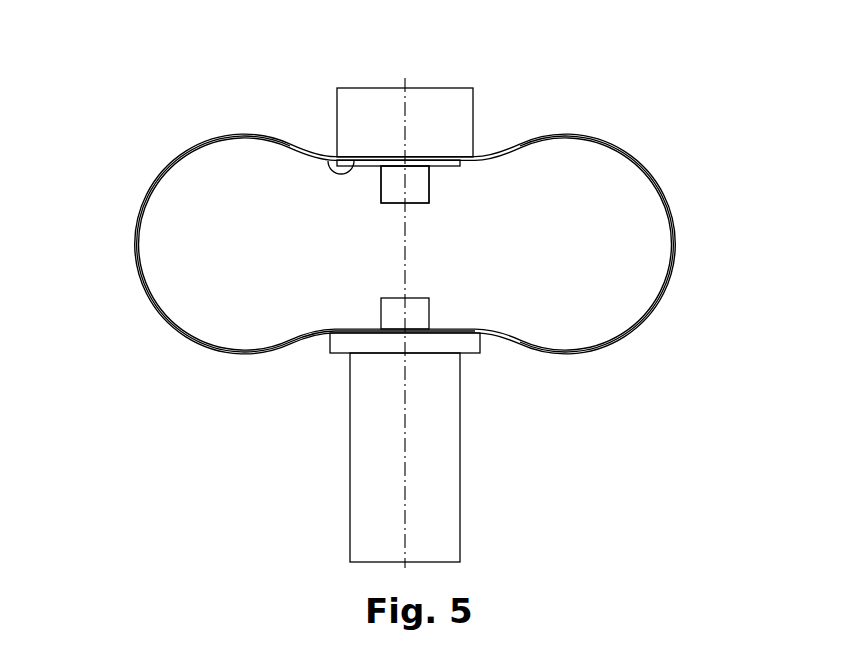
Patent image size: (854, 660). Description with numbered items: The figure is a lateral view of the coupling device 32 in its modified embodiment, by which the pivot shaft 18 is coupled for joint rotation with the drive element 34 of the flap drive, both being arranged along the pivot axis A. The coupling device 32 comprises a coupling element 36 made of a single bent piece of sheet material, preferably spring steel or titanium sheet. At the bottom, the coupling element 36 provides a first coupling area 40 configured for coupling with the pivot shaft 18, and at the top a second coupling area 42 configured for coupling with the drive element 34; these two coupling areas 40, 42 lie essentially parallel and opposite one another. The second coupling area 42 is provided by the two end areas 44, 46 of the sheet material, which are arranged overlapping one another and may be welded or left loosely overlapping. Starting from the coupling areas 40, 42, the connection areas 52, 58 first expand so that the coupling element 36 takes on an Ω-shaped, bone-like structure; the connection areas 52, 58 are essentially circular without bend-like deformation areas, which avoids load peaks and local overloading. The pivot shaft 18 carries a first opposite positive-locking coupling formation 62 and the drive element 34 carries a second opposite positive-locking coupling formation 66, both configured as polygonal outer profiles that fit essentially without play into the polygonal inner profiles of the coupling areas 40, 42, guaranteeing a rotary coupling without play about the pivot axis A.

The pivot shaft 18 is at (350, 528).
The coupling device 32 is at (655, 335).
The drive element 34 is at (368, 88).
The coupling element 36 is at (208, 372).
The first coupling area 40 is at (380, 344).
The second coupling area 42 is at (360, 179).
The end area 44 is at (336, 160).
The end area 46 is at (446, 157).
The connection area 52 is at (666, 202).
The connection area 58 is at (137, 253).
The first opposite positive-locking coupling formation 62 is at (450, 310).
The second opposite positive-locking coupling formation 66 is at (444, 193).
The pivot axis A is at (405, 483).